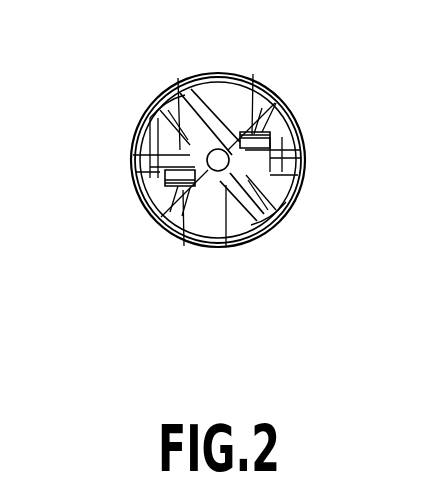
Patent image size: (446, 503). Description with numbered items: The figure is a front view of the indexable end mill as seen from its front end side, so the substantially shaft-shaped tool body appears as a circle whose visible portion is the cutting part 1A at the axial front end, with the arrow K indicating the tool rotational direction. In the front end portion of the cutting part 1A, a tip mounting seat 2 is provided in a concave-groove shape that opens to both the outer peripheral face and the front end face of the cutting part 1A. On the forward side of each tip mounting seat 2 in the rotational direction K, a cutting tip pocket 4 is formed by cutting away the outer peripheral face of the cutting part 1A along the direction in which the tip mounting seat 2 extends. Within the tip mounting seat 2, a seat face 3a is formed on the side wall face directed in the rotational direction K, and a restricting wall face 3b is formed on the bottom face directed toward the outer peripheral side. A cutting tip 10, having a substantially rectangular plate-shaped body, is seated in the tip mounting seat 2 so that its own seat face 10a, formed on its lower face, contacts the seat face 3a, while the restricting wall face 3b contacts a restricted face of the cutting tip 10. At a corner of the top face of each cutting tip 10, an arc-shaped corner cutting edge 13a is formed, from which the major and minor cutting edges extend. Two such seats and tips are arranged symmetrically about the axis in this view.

The cutting part 1A is at (143, 82).
The cutting tip 10 is at (121, 182).
The seat face 10a is at (138, 128).
The tip mounting seat 2 is at (140, 165).
The seat face 3a is at (254, 107).
The restricting wall face 3b is at (150, 108).
The cutting tip pocket 4 is at (280, 115).
The corner cutting edge 13a is at (183, 82).
The tool rotational direction K is at (250, 52).